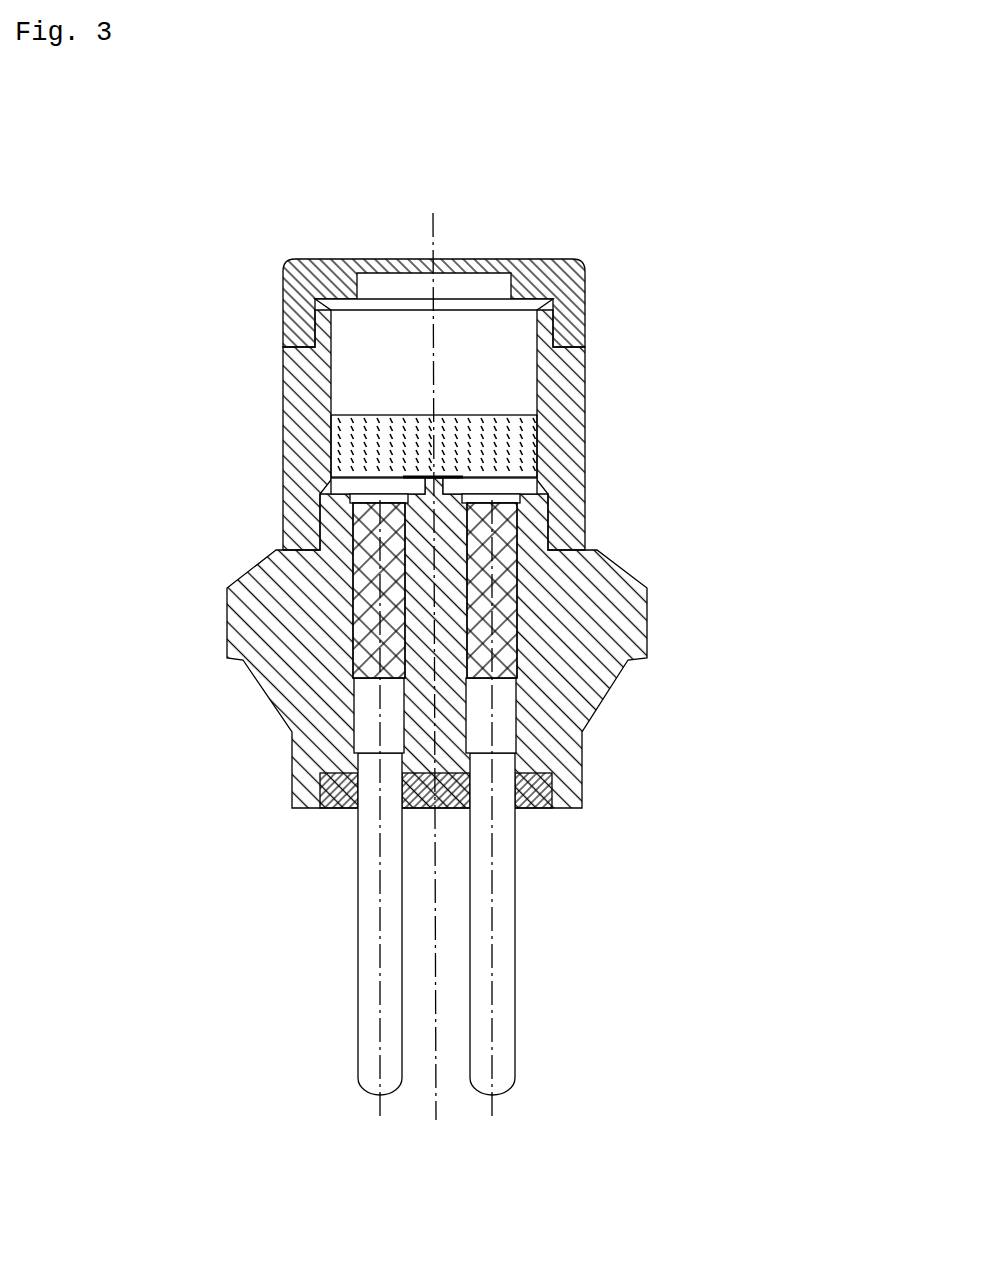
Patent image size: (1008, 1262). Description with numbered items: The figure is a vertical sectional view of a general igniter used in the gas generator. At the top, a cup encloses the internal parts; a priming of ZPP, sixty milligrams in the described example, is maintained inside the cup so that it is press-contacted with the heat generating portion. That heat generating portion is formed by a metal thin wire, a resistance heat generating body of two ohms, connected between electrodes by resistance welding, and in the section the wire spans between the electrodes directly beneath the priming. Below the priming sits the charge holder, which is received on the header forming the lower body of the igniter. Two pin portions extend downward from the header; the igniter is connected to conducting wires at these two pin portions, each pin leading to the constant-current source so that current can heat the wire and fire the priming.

The element igniter is at (351, 240).
The element cup is at (550, 258).
The element priming is at (470, 413).
The metal thin wire is at (433, 477).
The element charge holder is at (570, 507).
The element header is at (610, 617).
The pin portion pin is at (500, 793).